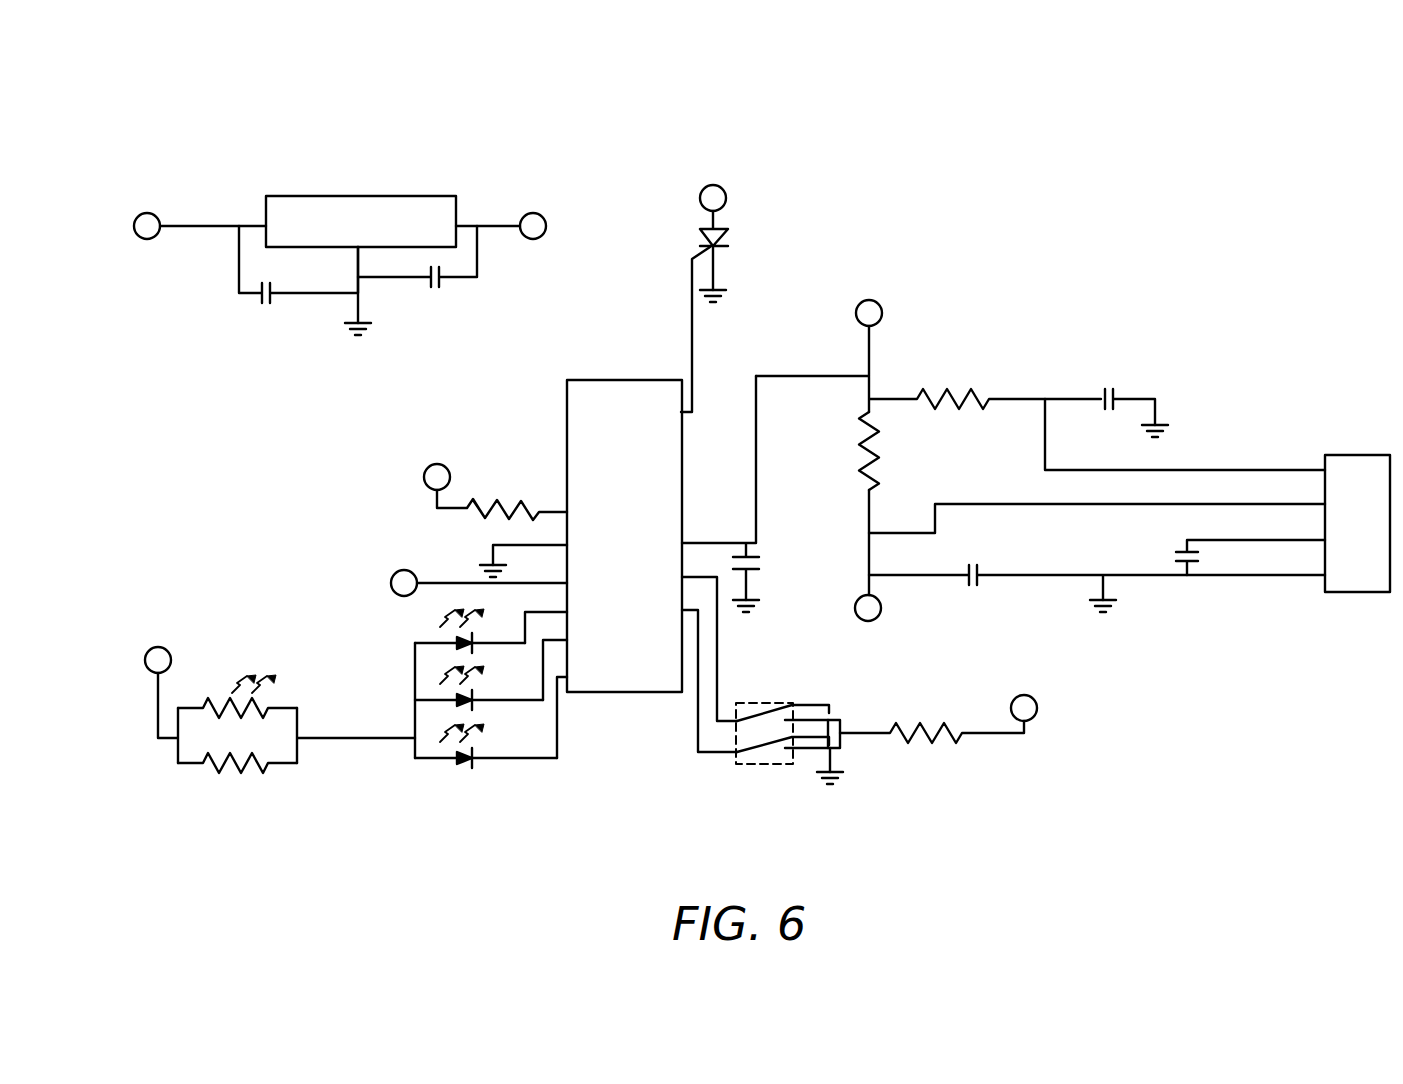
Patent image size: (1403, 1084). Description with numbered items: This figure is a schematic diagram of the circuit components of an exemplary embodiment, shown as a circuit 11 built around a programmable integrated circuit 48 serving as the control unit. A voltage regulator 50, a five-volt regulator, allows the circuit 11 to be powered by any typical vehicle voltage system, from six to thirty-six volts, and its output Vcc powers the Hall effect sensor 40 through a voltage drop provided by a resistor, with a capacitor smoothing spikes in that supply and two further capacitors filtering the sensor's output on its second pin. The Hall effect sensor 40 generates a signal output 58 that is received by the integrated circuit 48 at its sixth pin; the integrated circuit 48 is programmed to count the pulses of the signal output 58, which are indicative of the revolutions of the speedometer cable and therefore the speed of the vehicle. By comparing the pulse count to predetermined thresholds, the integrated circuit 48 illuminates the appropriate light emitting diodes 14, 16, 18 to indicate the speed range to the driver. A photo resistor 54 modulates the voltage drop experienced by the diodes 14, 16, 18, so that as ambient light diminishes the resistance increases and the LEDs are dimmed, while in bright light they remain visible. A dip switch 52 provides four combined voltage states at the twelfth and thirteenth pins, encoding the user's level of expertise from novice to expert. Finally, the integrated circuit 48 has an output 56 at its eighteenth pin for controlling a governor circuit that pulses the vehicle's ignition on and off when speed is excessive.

The circuit 11 is at (1069, 198).
The voltage regulator 50 is at (336, 178).
The output 56 is at (730, 238).
The programmable integrated circuit 48 is at (623, 388).
The signal output 58 is at (408, 568).
The diode D1 14 is at (463, 641).
The diode D2 16 is at (463, 697).
The diode D3 18 is at (467, 765).
The photo resistor 54 is at (220, 676).
The Hall effect sensor 40 is at (1363, 467).
The dip switch 52 is at (773, 790).